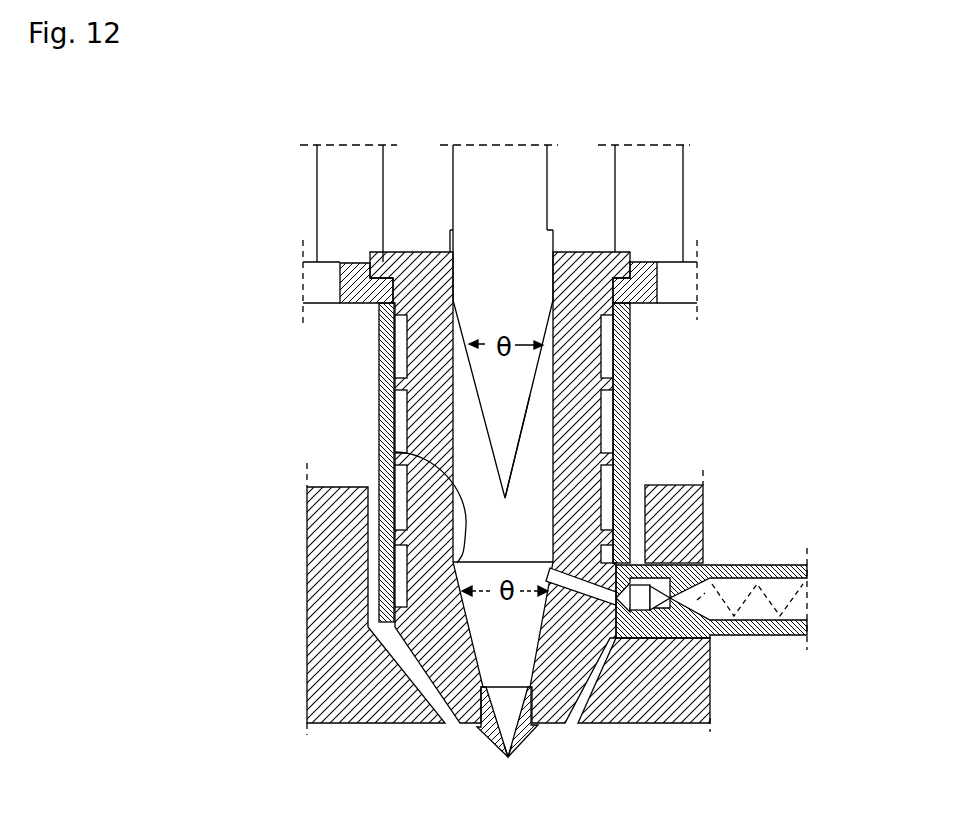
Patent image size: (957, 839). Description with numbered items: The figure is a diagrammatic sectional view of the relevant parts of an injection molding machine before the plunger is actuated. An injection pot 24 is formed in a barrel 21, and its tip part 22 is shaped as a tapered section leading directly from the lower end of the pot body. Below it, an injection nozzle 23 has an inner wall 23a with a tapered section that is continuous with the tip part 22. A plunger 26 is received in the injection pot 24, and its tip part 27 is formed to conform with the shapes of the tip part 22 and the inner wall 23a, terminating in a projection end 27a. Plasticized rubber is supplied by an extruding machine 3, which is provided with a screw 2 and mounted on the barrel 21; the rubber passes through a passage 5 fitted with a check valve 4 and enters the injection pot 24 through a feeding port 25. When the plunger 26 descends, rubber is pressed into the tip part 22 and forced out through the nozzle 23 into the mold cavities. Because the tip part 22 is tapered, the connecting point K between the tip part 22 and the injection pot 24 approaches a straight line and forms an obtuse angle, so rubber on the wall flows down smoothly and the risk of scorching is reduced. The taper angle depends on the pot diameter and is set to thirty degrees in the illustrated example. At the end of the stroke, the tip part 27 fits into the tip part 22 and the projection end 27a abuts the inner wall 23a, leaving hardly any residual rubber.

The screw 2 is at (765, 622).
The extruding machine 3 is at (809, 580).
The check valve 4 is at (645, 612).
The passage 5 is at (700, 544).
The barrel 21 is at (418, 341).
The tip part of the injection pot 22 is at (447, 690).
The injection nozzle 23 is at (523, 747).
The inner wall of the injection nozzle 23a is at (493, 750).
The injection pot 24 is at (546, 368).
The feeding port 25 is at (553, 567).
The plunger 26 is at (468, 195).
The tip part of the plunger 27 is at (490, 403).
The projection end of the plunger 27a is at (510, 459).
The connecting point K is at (395, 452).